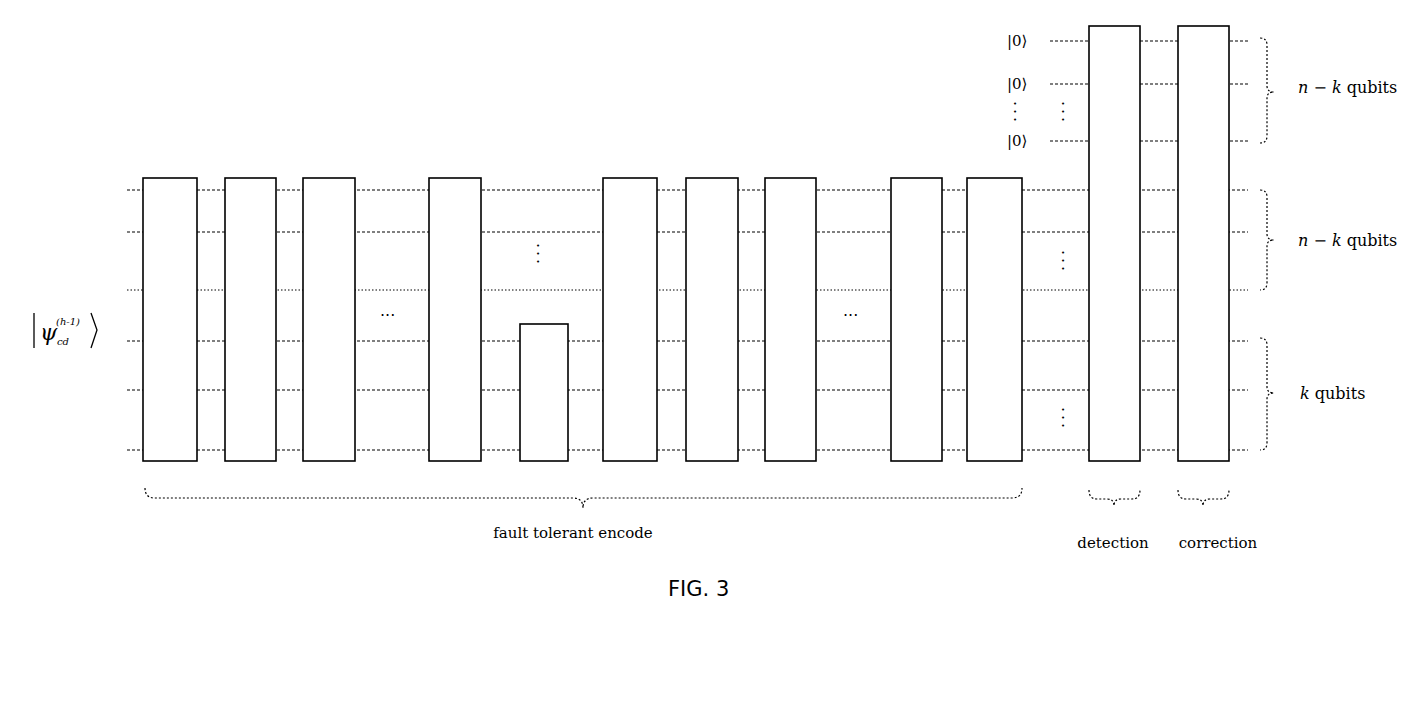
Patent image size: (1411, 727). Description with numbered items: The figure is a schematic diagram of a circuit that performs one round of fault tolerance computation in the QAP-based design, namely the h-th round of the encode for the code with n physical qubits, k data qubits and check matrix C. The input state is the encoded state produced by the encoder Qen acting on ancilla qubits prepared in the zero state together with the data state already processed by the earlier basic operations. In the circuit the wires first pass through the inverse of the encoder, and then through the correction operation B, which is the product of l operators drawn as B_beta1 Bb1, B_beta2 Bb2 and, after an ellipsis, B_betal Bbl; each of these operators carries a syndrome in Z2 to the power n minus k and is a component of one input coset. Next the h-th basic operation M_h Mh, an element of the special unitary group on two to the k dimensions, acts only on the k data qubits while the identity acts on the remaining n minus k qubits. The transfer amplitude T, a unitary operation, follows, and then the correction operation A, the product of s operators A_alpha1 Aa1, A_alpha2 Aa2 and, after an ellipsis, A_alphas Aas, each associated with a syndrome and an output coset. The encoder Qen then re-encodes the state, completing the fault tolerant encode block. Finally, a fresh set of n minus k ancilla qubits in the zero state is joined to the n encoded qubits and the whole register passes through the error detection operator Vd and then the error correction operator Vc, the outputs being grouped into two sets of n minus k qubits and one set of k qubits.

The correction operator B_beta1 Bb1 is at (250, 319).
The correction operator B_beta2 Bb2 is at (329, 319).
The correction operator B_betal Bbl is at (455, 319).
The basic operation Mh is at (544, 392).
The transfer amplitude T is at (630, 319).
The correction operator A_alpha1 Aa1 is at (712, 319).
The correction operator A_alpha2 Aa2 is at (790, 319).
The correction operator A_alphas Aas is at (916, 319).
The encoder Qen is at (994, 319).
The error detection operator Vd is at (1114, 243).
The error correction operator Vc is at (1203, 243).